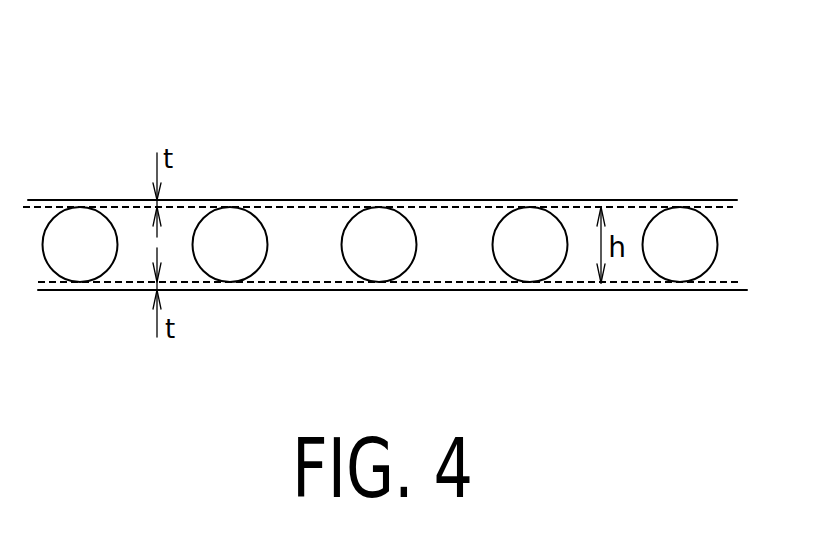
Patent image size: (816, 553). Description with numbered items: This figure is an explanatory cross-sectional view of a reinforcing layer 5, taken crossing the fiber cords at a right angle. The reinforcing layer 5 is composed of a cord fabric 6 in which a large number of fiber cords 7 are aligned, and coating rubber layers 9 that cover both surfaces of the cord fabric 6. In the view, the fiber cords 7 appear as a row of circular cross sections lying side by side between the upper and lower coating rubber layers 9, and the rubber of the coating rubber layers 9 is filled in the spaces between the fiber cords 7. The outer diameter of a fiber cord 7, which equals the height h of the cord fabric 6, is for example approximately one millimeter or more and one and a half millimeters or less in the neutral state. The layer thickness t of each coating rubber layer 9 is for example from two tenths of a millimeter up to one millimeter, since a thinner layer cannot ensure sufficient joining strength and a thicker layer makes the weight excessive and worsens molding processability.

The reinforcing layer 5 is at (385, 189).
The cord fabric 6 is at (420, 213).
The fiber cord 7 is at (79, 218).
The coating rubber layer 9 is at (308, 200).